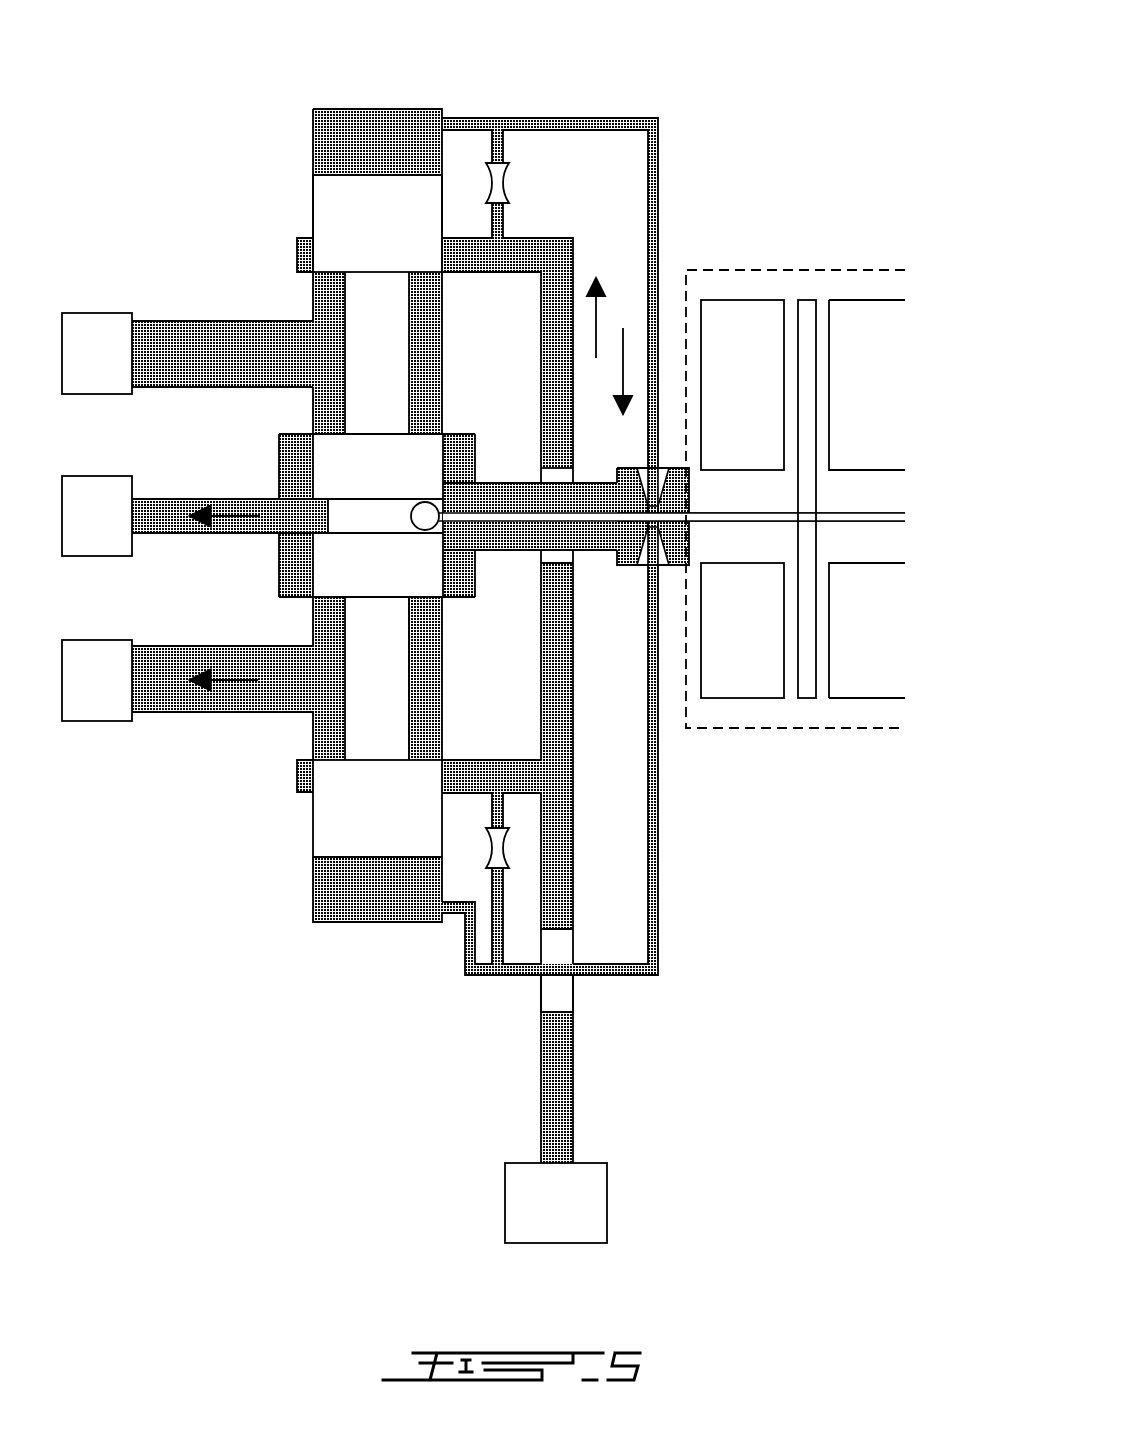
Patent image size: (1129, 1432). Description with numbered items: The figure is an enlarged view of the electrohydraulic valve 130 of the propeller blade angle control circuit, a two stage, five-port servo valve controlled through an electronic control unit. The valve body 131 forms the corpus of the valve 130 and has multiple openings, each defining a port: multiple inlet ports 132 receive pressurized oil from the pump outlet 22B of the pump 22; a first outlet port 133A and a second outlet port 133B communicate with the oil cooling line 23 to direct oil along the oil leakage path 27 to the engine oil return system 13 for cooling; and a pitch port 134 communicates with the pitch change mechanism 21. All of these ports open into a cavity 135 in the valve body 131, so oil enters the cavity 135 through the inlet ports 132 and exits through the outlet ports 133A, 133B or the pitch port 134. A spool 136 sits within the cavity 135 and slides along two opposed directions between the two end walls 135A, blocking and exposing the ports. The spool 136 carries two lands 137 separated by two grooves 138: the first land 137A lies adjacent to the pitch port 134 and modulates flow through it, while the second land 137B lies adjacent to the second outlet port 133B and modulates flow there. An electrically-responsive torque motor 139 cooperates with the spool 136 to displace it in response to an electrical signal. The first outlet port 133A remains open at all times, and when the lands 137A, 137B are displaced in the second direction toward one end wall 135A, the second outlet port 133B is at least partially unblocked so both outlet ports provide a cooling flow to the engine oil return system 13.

The valve 130 is at (750, 126).
The end walls 135A is at (377, 108).
The lands 137 is at (295, 221).
The first land 137A is at (323, 196).
The second land 137B is at (333, 826).
The inlet ports 132 is at (278, 240).
The pitch port 134 is at (300, 312).
The pitch change mechanism 21 is at (187, 353).
The grooves 138 is at (413, 355).
The oil cooling line 23 is at (160, 498).
The oil leakage path 27 is at (223, 498).
The engine oil return system 13 is at (97, 598).
The first outlet port 133A is at (266, 546).
The second outlet port 133B is at (300, 727).
The spool 136 is at (392, 657).
The cavity 135 is at (330, 887).
The valve body 131 is at (660, 922).
The torque motor 139 is at (810, 735).
The pump 22 is at (556, 1109).
The pump outlet 22B is at (556, 1203).